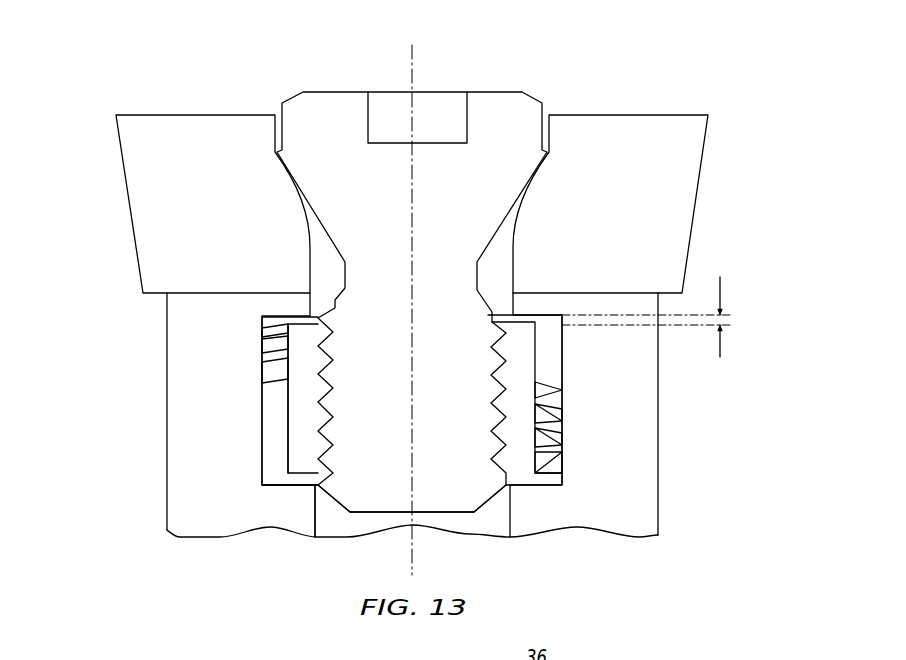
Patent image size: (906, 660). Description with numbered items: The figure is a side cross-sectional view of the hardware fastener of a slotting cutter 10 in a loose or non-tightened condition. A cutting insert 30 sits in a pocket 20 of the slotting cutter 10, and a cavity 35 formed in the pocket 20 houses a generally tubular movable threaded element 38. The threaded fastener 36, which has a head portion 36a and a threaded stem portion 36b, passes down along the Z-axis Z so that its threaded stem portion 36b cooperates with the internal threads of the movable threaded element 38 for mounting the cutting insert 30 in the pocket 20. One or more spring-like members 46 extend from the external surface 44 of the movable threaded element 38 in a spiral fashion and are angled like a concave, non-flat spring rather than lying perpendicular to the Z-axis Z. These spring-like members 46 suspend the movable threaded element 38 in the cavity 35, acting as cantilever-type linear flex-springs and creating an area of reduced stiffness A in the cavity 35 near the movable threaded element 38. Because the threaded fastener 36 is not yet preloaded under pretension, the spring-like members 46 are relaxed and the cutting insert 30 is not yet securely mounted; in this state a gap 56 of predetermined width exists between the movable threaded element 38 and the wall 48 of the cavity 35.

The slotting cutter 10 is at (72, 100).
The pocket 20 is at (708, 192).
The cutting insert 30 is at (684, 94).
The cavity 35 is at (275, 475).
The threaded fastener 36 is at (500, 86).
The head portion 36a is at (519, 112).
The threaded stem portion 36b is at (455, 477).
The movable threaded element 38 is at (286, 407).
The external surface 44 is at (535, 347).
The spring-like members 46 is at (557, 395).
The wall 48 is at (289, 480).
The gap 56 is at (720, 277).
The area of reduced stiffness A is at (282, 313).
The Z-axis Z is at (413, 70).